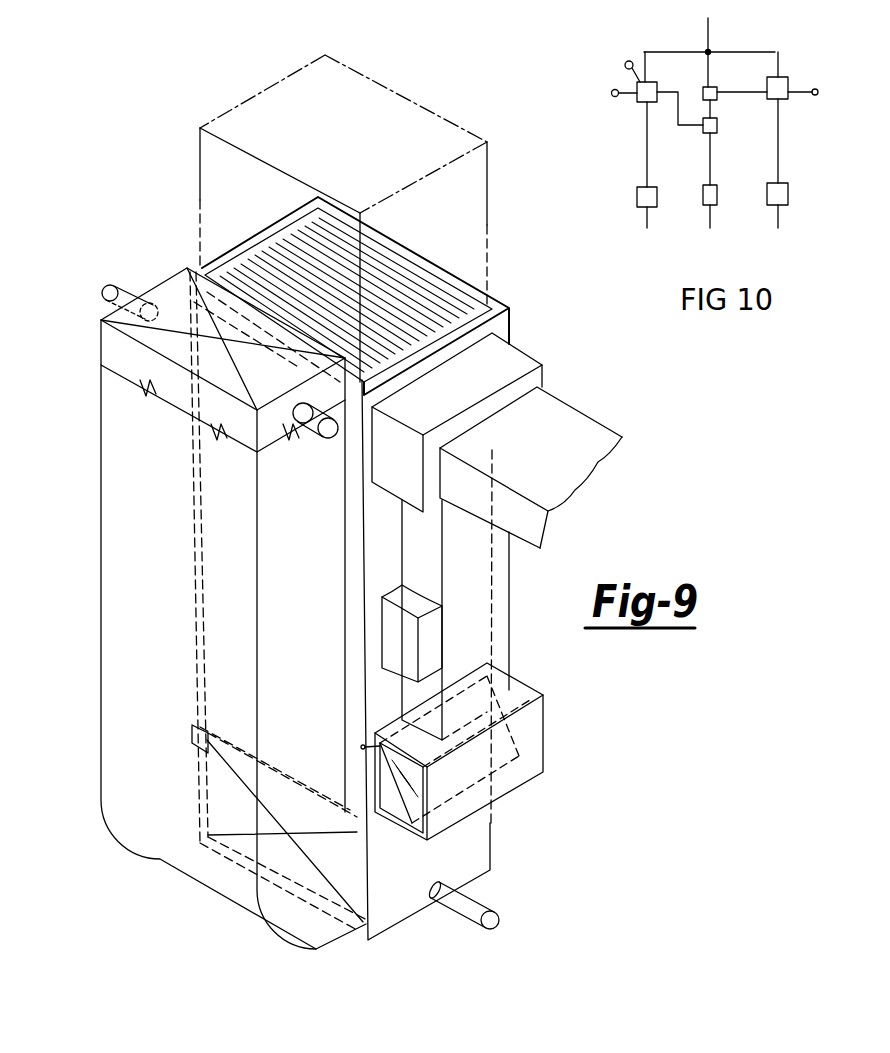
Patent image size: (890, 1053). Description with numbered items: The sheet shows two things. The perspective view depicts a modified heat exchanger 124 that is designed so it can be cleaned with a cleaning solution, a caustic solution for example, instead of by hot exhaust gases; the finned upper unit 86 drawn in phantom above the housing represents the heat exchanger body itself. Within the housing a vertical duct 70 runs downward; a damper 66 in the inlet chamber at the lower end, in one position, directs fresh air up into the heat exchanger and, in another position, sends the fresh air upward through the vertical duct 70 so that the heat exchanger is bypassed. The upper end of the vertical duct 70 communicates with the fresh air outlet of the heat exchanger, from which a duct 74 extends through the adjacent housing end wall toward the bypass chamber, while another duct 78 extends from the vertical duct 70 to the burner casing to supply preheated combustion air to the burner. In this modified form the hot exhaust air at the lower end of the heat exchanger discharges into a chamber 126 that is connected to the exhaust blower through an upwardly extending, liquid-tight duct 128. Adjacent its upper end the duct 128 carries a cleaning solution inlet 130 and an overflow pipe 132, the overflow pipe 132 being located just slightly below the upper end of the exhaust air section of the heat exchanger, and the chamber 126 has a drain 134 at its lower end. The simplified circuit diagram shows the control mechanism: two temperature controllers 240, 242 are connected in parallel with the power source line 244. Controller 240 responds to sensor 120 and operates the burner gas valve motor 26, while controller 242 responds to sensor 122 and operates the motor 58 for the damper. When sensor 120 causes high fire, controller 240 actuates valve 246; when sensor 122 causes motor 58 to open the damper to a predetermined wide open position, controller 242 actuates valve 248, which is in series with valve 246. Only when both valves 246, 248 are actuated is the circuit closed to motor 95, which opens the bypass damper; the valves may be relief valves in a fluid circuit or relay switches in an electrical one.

In FIG. 9, the damper 66 is at (400, 750).
In FIG. 9, the vertical duct 70 is at (502, 596).
In FIG. 9, the duct 74 is at (560, 408).
In FIG. 9, the duct 78 is at (408, 597).
In FIG. 9, the heat exchanger 86 is at (433, 118).
In FIG. 9, the heat exchanger 124 is at (516, 330).
In FIG. 9, the chamber 126 is at (490, 827).
In FIG. 9, the liquid-tight duct 128 is at (110, 508).
In FIG. 9, the cleaning solution inlet 130 is at (126, 288).
In FIG. 9, the overflow pipe 132 is at (292, 444).
In FIG. 9, the drain 134 is at (476, 905).
In FIG. 10, the power source line 244 is at (709, 37).
In FIG. 10, the temperature controller 240 is at (650, 88).
In FIG. 10, the sensor 120 is at (612, 96).
In FIG. 10, the valve 248 is at (713, 87).
In FIG. 10, the temperature controller 242 is at (779, 78).
In FIG. 10, the sensor 122 is at (825, 80).
In FIG. 10, the valve 246 is at (718, 127).
In FIG. 10, the burner gas valve motor 26 is at (655, 205).
In FIG. 10, the motor 95 is at (717, 193).
In FIG. 10, the motor 58 is at (789, 191).